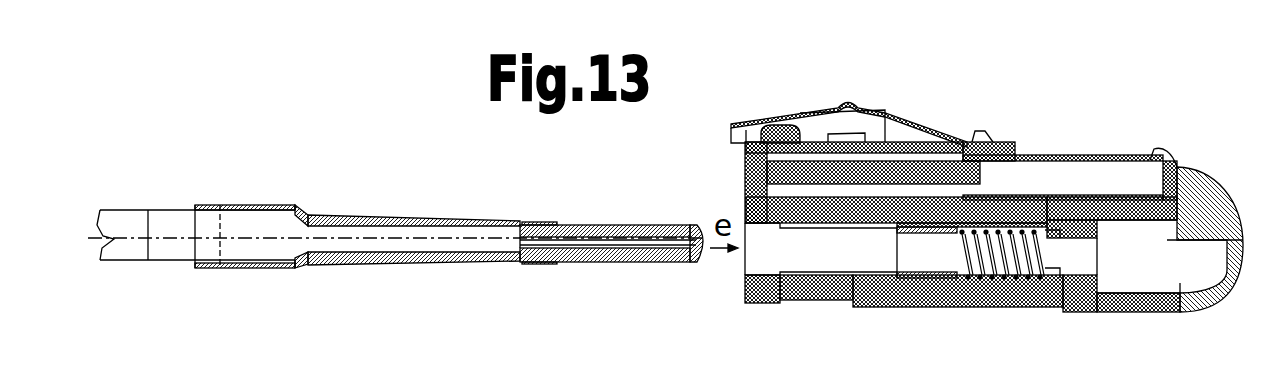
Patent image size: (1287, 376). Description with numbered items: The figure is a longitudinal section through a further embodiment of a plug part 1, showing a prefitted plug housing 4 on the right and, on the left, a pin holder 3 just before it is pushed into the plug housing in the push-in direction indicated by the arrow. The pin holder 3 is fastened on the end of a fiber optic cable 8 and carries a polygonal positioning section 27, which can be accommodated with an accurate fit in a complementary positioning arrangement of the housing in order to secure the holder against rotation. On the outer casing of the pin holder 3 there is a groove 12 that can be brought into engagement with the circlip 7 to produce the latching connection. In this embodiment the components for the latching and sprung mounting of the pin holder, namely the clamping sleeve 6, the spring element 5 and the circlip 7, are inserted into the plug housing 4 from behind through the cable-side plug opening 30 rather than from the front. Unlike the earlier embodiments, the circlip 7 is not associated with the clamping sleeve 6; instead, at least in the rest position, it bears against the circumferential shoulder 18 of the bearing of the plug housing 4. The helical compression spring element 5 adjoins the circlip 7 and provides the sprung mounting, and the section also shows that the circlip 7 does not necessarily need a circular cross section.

The plug part 1 is at (994, 259).
The pin holder 3 is at (404, 204).
The plug housing 4 is at (910, 140).
The spring element 5 is at (1025, 197).
The clamping sleeve 6 is at (923, 273).
The circlip 7 is at (1020, 227).
The fiber optic cable 8 is at (113, 238).
The groove 12 is at (503, 263).
The circumferential shoulder 18 is at (1063, 283).
The polygonal positioning section 27 is at (243, 268).
The cable-side plug opening 30 is at (752, 268).